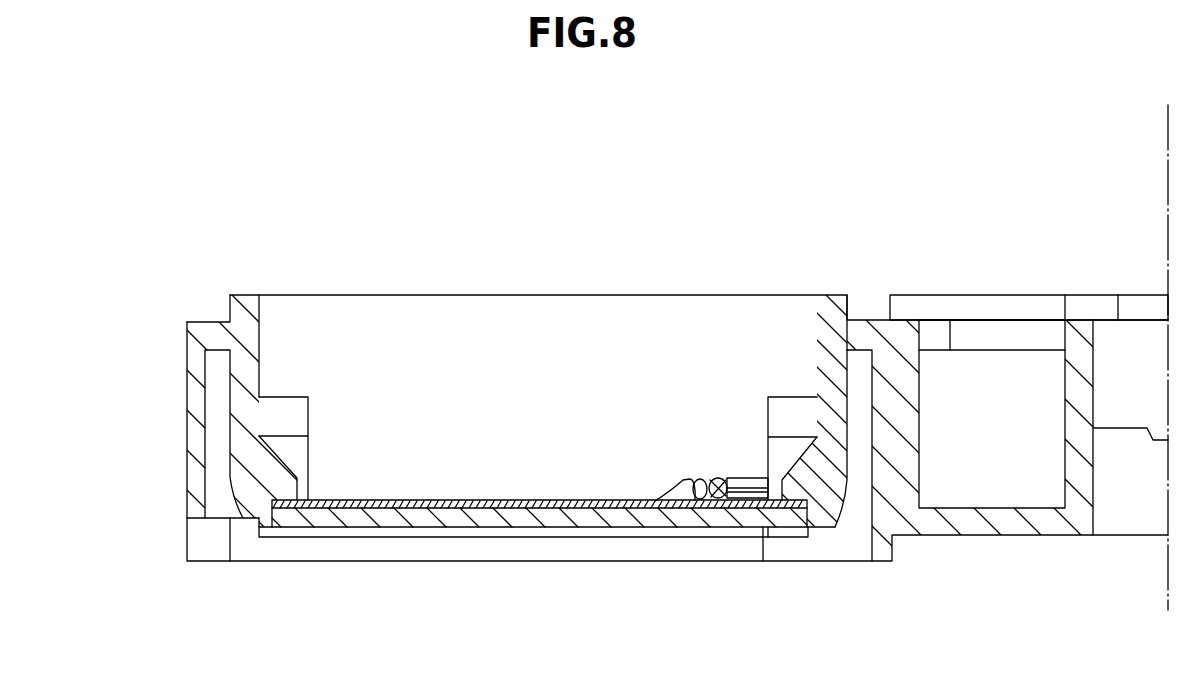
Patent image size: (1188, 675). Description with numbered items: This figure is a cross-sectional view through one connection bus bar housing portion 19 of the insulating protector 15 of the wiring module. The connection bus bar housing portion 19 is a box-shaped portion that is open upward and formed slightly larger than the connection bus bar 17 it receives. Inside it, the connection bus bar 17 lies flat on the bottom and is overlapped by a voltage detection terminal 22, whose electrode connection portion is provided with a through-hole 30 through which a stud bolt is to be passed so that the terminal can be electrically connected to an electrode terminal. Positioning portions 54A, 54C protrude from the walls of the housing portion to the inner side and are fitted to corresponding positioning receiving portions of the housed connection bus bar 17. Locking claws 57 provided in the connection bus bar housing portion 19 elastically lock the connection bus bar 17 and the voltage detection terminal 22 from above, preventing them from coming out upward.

The insulating protector 15 is at (190, 391).
The connection bus bar 17 is at (354, 527).
The connection bus bar housing portion 19 is at (260, 339).
The voltage detection terminal 22 is at (379, 502).
The through-hole 30 is at (467, 501).
The positioning portion 54A is at (792, 412).
The positioning portion 54C is at (279, 412).
The locking claw 57 is at (279, 477).